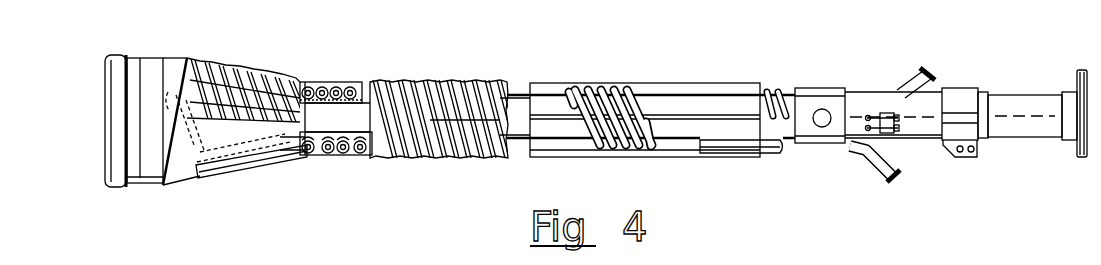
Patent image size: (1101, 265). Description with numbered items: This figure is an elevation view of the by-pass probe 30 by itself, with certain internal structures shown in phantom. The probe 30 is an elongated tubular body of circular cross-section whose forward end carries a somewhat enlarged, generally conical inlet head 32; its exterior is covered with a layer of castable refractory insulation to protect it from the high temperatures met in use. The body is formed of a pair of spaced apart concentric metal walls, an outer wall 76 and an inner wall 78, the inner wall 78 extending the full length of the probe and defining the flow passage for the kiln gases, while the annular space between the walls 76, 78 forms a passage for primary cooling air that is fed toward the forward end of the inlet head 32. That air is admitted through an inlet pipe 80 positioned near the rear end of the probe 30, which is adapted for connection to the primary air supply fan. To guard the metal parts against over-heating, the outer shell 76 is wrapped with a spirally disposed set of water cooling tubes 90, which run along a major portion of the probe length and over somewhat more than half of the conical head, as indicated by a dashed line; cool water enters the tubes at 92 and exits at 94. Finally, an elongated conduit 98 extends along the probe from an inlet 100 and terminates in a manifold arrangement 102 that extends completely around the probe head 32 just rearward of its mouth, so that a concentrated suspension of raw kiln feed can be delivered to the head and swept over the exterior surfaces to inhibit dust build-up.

The manifold arrangement 102 is at (158, 57).
The inlet head 32 is at (240, 68).
The outer metal wall 76 is at (318, 86).
The inner metal wall 78 is at (352, 90).
The probe 30 is at (472, 60).
The water cooling tubes 90 is at (336, 156).
The conduit 98 is at (232, 172).
The cool water inlet 92 is at (878, 113).
The inlet pipe 80 is at (925, 72).
The inlet 100 is at (887, 176).
The water exit 94 is at (905, 130).